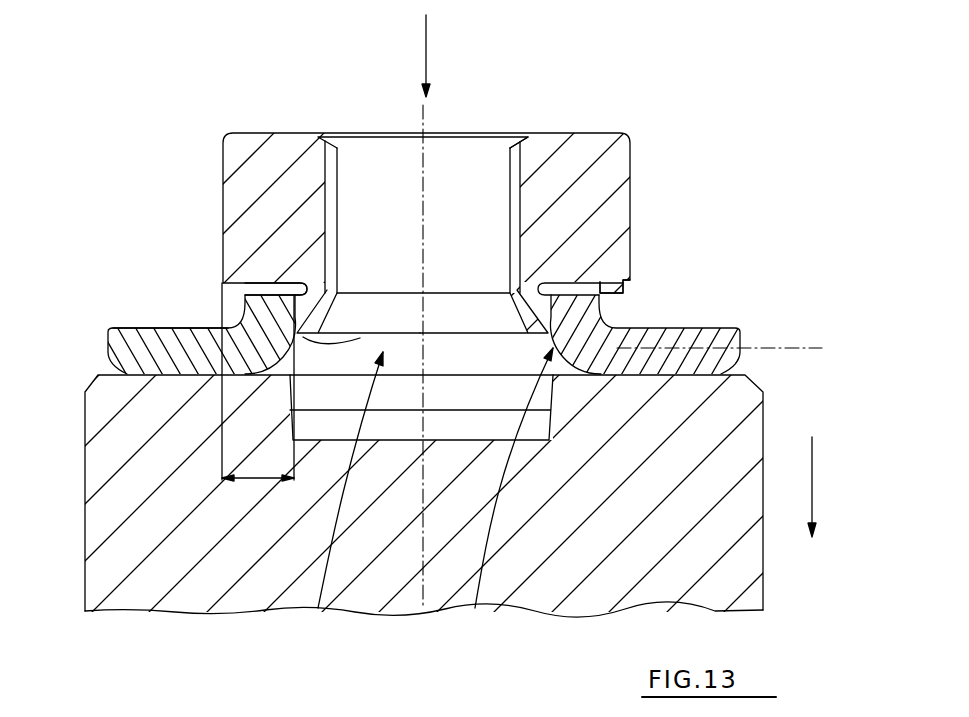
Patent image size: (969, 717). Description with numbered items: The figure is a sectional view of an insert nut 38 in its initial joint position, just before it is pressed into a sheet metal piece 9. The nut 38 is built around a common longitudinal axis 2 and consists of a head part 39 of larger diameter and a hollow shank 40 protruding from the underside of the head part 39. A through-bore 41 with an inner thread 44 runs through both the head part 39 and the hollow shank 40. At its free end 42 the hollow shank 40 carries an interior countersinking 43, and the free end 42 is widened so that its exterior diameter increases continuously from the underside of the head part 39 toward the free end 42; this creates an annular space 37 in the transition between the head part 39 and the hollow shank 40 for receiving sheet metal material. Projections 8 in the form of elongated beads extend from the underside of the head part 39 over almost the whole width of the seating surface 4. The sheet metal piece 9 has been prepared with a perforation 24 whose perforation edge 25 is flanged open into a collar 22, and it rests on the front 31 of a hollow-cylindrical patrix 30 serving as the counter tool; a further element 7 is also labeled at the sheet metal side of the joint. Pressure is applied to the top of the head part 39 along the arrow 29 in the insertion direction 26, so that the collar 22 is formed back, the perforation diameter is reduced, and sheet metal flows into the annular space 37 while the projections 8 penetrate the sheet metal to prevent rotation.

The longitudinal axis 2 is at (425, 120).
The arrow 29 is at (427, 42).
The nut 38 is at (457, 211).
The head part 39 is at (606, 210).
The through-bore 41 is at (398, 147).
The inner thread 44 is at (505, 147).
The hollow shank 40 is at (320, 305).
The interior countersinking 43 is at (522, 318).
The free end 42 is at (360, 338).
The annular space 37 is at (553, 287).
The first flange 7 is at (384, 298).
The front 31 is at (167, 343).
The perforation edge 25 is at (222, 310).
The projections 8 is at (270, 288).
The sheet metal piece 9 is at (738, 332).
The patrix 30 is at (693, 563).
The seating surface 4 is at (260, 480).
The perforation 24 is at (343, 501).
The collar 22 is at (823, 305).
The insertion direction 26 is at (814, 470).